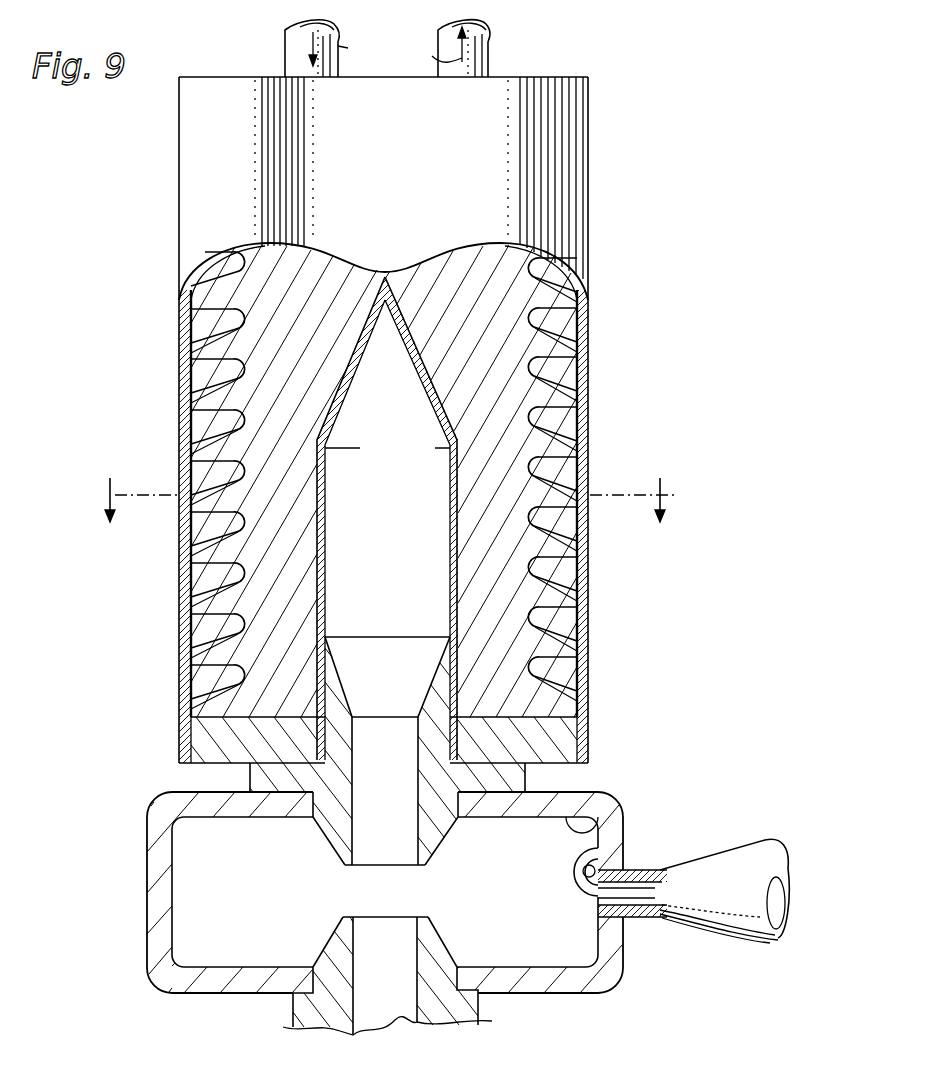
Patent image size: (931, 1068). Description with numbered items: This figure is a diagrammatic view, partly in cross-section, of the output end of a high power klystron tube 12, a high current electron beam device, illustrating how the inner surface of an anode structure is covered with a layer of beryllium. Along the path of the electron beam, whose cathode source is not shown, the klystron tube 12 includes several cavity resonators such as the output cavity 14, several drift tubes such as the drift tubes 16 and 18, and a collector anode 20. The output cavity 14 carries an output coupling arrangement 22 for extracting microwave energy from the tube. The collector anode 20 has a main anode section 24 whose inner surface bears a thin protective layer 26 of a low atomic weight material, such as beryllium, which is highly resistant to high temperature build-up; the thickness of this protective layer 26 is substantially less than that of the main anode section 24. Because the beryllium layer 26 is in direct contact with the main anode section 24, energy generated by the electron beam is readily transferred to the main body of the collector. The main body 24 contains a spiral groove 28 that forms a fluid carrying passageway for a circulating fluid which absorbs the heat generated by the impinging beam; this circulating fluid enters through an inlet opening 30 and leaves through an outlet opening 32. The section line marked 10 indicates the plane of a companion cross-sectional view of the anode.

The section line 10- 10 is at (386, 500).
The klystron tube 12 is at (645, 356).
The output cavity 14 is at (598, 827).
The drift tube 16 is at (418, 950).
The drift tube 18 is at (357, 818).
The collector anode 20 is at (590, 679).
The output coupling arrangement 22 is at (730, 876).
The main anode section 24 is at (512, 497).
The protective layer 26 is at (325, 463).
The spiral groove 28 is at (583, 607).
The inlet opening 30 is at (285, 44).
The outlet opening 32 is at (490, 44).